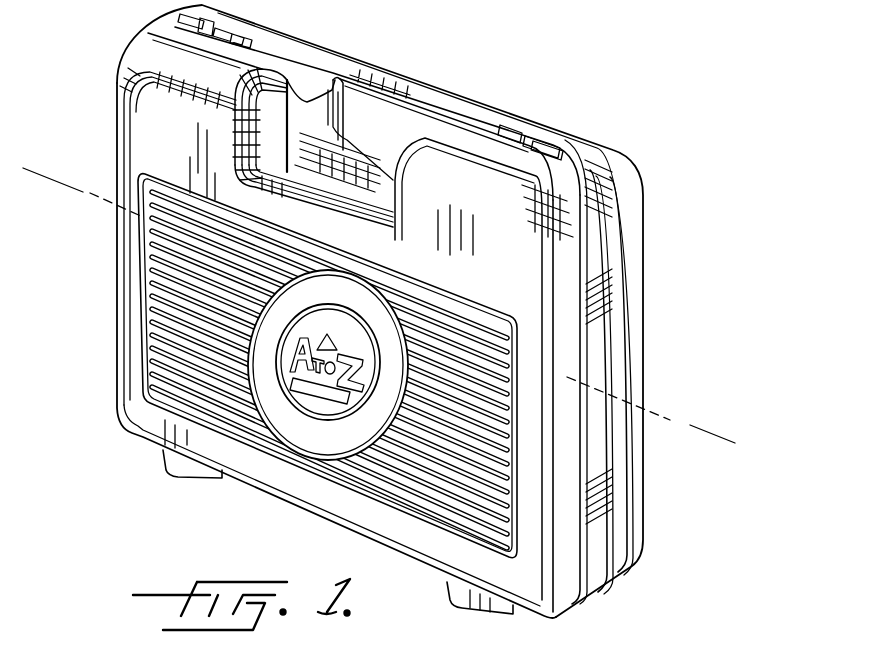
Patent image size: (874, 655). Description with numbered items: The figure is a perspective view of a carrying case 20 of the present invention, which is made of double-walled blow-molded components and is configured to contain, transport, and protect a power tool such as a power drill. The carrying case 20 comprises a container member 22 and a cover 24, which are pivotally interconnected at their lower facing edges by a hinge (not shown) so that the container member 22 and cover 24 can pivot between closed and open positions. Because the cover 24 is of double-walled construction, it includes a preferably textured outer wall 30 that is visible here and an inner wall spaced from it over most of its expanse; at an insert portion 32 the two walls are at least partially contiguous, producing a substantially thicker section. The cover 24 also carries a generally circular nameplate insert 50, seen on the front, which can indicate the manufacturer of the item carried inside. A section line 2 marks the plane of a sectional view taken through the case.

The carrying case 20 is at (461, 311).
The container member 22 is at (615, 150).
The cover 24 is at (567, 315).
The outer wall 30 is at (520, 262).
The insert portion 32 is at (485, 438).
The nameplate insert 50 is at (282, 432).
The section line 2- 2 is at (772, 430).